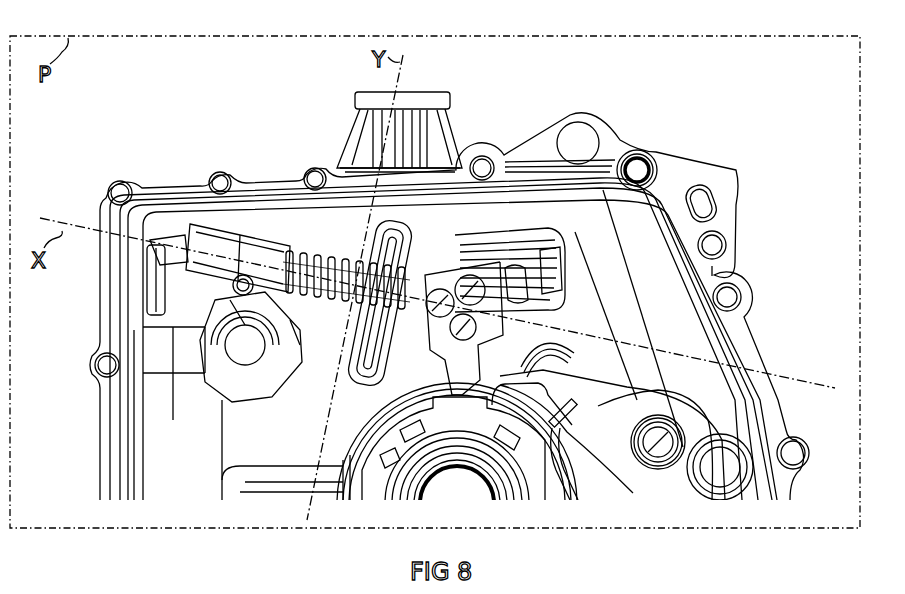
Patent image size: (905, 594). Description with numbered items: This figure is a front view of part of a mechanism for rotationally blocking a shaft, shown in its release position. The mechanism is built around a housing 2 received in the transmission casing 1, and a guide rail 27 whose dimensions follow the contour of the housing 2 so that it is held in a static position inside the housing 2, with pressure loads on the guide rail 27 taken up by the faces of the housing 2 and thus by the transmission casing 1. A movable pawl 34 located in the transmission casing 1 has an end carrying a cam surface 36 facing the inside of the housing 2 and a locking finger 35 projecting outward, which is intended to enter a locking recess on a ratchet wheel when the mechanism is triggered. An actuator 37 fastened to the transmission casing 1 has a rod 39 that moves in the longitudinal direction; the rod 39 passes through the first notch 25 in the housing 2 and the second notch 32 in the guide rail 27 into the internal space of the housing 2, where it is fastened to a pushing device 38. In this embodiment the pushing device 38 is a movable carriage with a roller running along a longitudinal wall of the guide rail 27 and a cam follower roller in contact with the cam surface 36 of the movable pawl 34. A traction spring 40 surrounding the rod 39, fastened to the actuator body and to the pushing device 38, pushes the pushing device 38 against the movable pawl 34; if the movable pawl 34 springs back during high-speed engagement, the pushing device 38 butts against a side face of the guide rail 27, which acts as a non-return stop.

The transmission casing 1 is at (723, 173).
The housing 2 is at (590, 207).
The first notch 25 is at (395, 283).
The guide rail 27 is at (553, 262).
The second notch 32 is at (405, 278).
The movable pawl 34 is at (600, 404).
The locking finger 35 is at (480, 393).
The cam surface 36 is at (517, 271).
The actuator 37 is at (340, 300).
The pushing device 38 is at (443, 280).
The rod 39 is at (337, 268).
The traction spring 40 is at (291, 259).